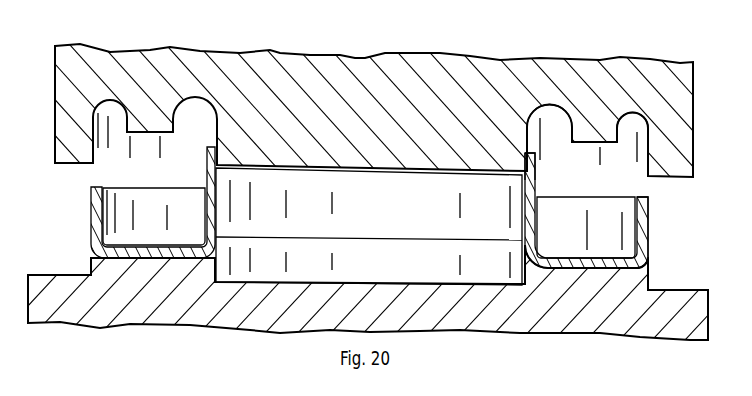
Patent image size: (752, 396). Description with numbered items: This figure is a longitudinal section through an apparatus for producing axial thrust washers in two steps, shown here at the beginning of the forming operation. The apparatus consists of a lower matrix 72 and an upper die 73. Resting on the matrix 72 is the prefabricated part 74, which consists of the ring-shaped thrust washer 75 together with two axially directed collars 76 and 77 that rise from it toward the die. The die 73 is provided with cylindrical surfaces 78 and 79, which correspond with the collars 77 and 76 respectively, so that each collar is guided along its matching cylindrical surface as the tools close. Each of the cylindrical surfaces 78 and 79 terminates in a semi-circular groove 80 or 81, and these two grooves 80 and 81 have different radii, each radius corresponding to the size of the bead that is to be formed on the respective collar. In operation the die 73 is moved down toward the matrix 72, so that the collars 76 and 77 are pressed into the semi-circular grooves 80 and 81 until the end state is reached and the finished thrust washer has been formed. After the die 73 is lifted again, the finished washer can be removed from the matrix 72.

The matrix 72 is at (703, 307).
The die 73 is at (682, 102).
The prefabricated part 74 is at (650, 237).
The ring-shaped thrust washer 75 is at (578, 260).
The axially directed collar 76 is at (643, 225).
The axially directed collar 77 is at (528, 203).
The cylindrical surface 78 is at (521, 143).
The cylindrical surface 79 is at (652, 152).
The semi-circular groove 80 is at (547, 100).
The semi-circular groove 81 is at (640, 106).